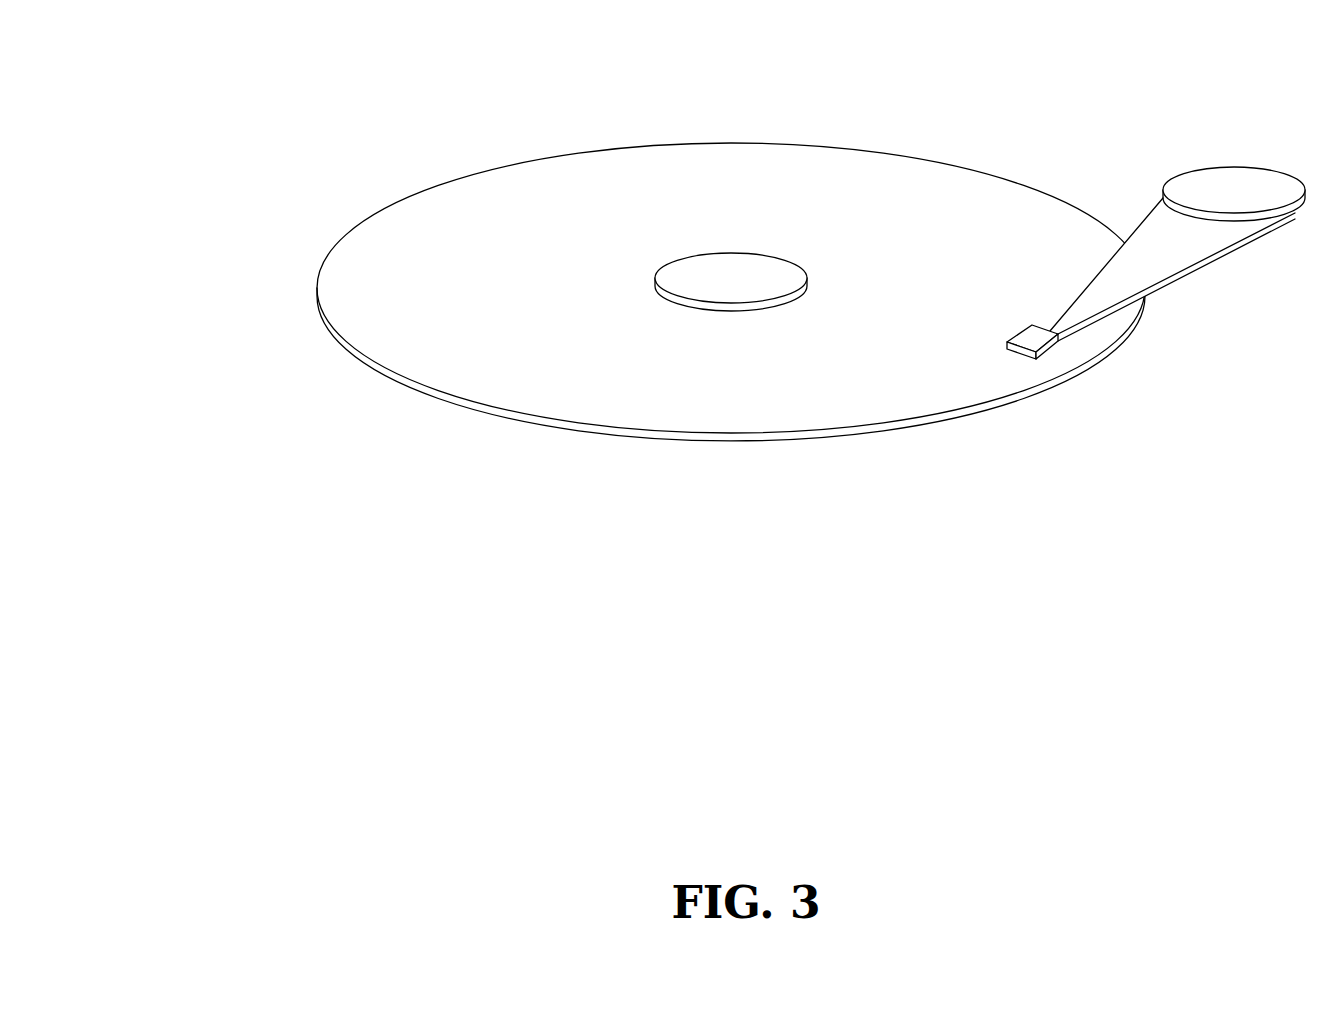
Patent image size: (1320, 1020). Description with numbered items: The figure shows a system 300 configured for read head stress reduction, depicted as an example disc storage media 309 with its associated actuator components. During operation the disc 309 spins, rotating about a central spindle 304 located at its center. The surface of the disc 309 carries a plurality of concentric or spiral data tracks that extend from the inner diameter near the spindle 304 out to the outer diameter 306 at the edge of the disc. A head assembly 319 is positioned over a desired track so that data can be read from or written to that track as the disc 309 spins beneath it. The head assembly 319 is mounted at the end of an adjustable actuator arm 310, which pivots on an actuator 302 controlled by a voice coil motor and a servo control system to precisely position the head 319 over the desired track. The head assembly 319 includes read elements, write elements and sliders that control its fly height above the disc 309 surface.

The system 300 is at (184, 52).
The actuator 302 is at (1233, 163).
The central spindle 304 is at (737, 254).
The outer diameter 306 is at (501, 439).
The disc storage media 309 is at (442, 183).
The actuator arm 310 is at (1172, 280).
The head assembly 319 is at (1032, 325).